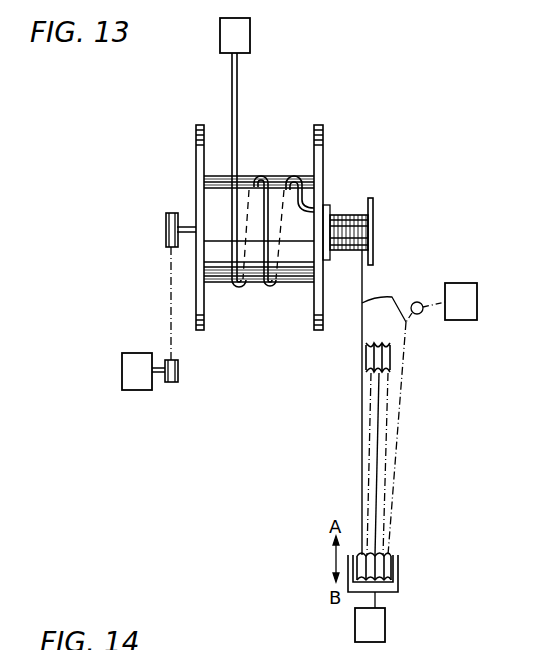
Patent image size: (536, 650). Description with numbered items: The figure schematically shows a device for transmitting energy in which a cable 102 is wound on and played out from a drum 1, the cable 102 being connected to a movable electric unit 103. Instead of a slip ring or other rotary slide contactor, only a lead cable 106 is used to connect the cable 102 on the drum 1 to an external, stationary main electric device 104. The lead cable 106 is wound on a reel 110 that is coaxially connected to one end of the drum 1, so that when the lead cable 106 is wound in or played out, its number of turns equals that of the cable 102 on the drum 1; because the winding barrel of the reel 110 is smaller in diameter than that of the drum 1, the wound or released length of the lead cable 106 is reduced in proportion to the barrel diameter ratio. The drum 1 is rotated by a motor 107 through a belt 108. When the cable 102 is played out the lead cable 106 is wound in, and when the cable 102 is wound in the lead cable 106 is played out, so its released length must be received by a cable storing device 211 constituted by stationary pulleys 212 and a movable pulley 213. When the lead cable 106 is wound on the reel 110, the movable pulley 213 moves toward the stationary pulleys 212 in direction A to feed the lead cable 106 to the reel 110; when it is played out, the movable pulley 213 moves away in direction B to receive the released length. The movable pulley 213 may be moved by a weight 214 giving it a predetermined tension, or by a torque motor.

The bobbin 1 is at (221, 277).
The cable 102 is at (237, 97).
The movable electric unit 103 is at (245, 40).
The main electric device 104 is at (459, 312).
The lead cable 106 is at (392, 297).
The motor 107 is at (136, 390).
The belt 108 is at (170, 333).
The reel 110 is at (373, 199).
The cable storing device 211 is at (384, 458).
The stationary pulleys 212 is at (370, 356).
The movable pulley 213 is at (396, 573).
The weight 214 is at (385, 628).